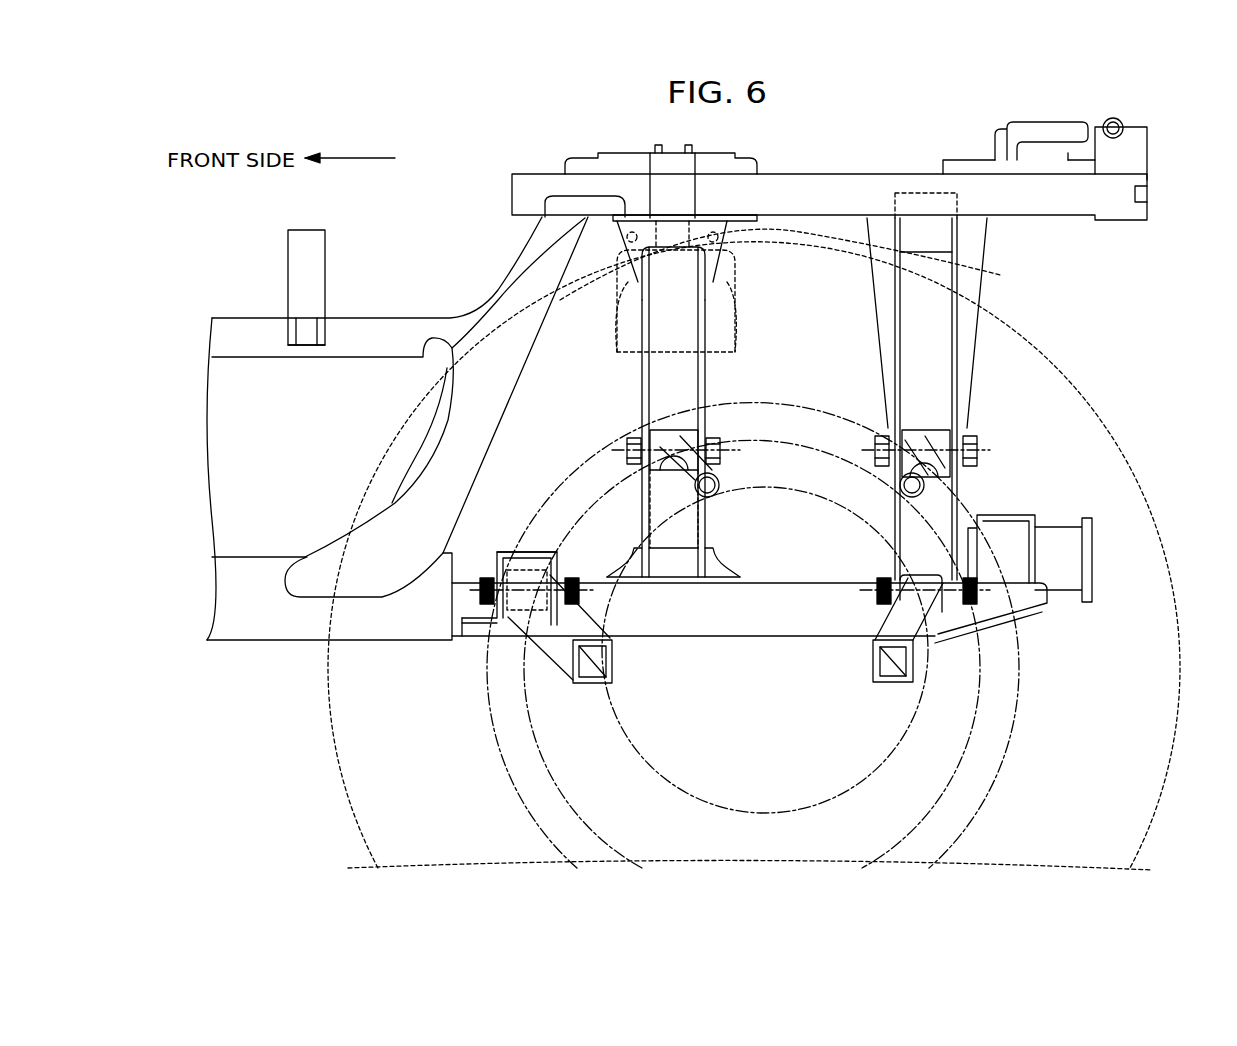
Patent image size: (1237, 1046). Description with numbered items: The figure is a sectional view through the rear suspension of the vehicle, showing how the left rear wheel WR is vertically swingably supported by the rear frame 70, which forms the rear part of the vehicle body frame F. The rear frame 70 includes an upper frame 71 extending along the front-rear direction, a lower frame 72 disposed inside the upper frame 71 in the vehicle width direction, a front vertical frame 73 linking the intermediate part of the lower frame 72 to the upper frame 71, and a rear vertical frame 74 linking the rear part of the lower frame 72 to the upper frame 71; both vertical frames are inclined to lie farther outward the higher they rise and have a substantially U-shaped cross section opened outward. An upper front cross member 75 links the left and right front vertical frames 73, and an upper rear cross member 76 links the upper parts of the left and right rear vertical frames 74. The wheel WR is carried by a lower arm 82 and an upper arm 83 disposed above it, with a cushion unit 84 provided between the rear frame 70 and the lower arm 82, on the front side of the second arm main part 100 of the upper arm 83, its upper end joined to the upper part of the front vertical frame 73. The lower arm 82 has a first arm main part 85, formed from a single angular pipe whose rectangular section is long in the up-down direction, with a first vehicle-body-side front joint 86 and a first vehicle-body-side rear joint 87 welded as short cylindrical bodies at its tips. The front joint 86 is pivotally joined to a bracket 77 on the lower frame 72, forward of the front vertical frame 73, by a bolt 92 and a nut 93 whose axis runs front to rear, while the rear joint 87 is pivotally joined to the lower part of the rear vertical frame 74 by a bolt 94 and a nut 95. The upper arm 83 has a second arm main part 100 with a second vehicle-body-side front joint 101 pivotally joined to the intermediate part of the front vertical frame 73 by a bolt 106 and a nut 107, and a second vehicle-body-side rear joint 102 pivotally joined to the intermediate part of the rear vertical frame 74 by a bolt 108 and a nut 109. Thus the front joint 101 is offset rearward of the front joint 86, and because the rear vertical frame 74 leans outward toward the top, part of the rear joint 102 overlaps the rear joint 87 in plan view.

The rear frame 70 is at (972, 376).
The upper frame 71 is at (822, 188).
The lower frame 72 is at (805, 605).
The front vertical frame 73 is at (641, 372).
The rear vertical frame 74 is at (976, 302).
The upper front cross member 75 is at (688, 150).
The upper rear cross member 76 is at (950, 230).
The bracket 77 is at (525, 552).
The lower arm 82 is at (548, 652).
The upper arm 83 is at (724, 468).
The cushion unit 84 is at (725, 336).
The first arm main part 85 is at (540, 655).
The first vehicle-body-side front joint 86 is at (552, 552).
The first vehicle-body-side rear joint 87 is at (924, 572).
The bolt 92 is at (487, 578).
The nut 93 is at (570, 580).
The bolt 94 is at (875, 580).
The nut 95 is at (977, 638).
The second arm main part 100 is at (674, 509).
The second vehicle-body-side front joint 101 is at (684, 428).
The second vehicle-body-side rear joint 102 is at (945, 432).
The bolt 106 is at (633, 450).
The nut 107 is at (722, 452).
The bolt 108 is at (878, 438).
The nut 109 is at (980, 443).
The vehicle body frame F is at (468, 305).
The rear wheel WR is at (1150, 500).